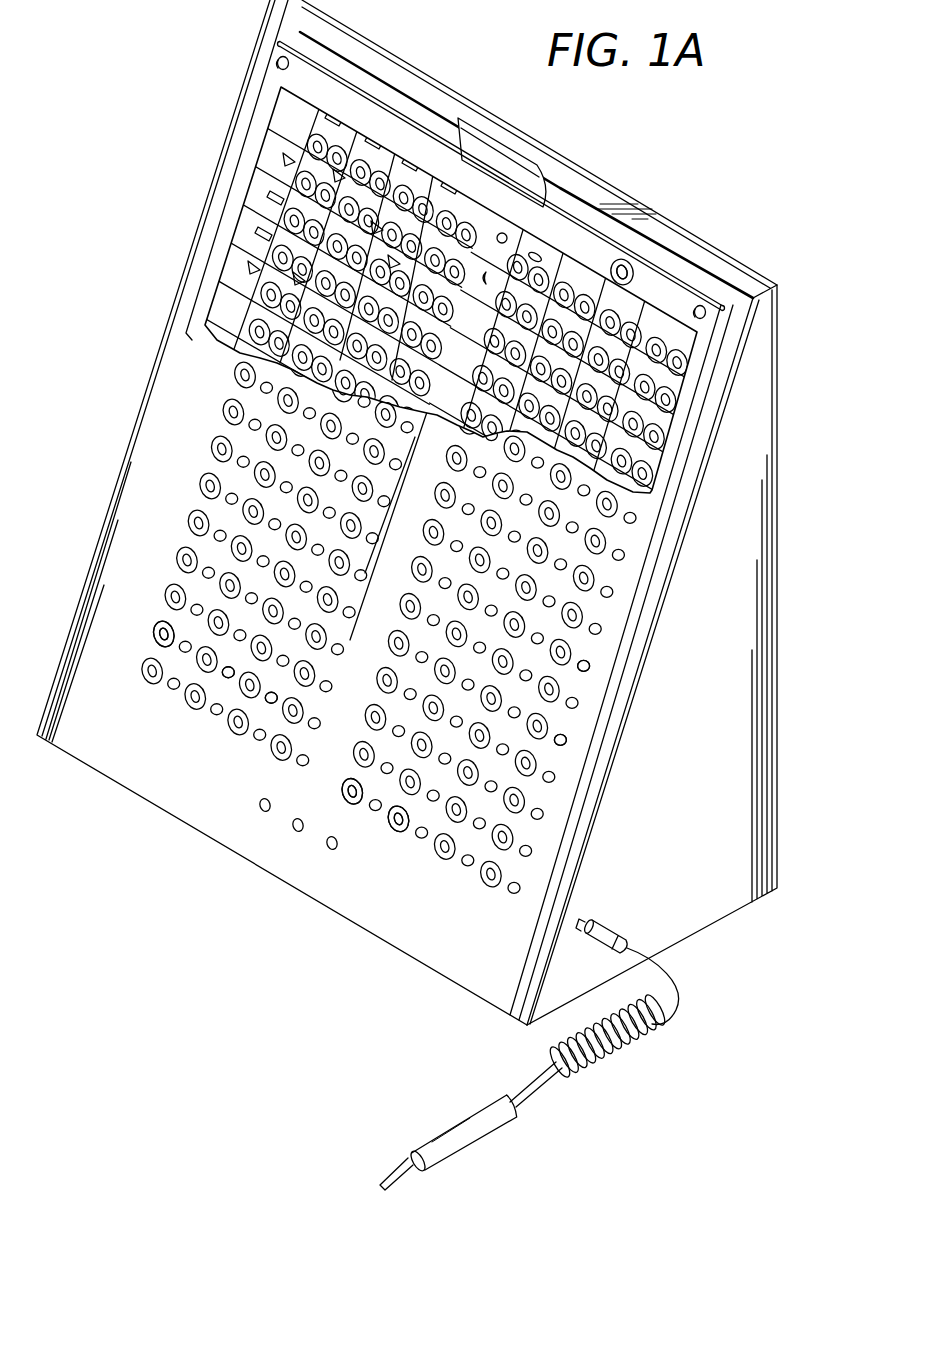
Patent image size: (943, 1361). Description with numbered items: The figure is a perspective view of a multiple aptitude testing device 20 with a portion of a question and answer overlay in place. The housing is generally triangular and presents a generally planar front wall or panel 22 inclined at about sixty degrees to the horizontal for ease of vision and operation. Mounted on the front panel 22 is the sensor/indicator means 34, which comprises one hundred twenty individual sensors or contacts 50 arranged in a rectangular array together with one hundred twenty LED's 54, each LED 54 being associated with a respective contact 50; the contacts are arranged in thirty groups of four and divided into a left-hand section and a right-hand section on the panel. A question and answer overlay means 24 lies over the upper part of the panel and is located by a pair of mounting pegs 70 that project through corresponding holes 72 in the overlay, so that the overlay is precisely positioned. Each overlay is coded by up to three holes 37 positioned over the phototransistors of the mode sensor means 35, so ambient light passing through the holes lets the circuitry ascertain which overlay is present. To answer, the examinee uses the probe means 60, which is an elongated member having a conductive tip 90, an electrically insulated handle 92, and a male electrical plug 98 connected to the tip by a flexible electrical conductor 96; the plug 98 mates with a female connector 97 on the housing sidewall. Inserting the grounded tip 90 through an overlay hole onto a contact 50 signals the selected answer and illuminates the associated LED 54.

The multiple aptitude testing device 20 is at (134, 403).
The front wall or panel 22 is at (216, 185).
The question and answer overlay means 24 is at (226, 283).
The sensor/indicator means 34 is at (298, 515).
The mode sensor means 35 is at (630, 265).
The holes 37 is at (621, 277).
The sensors or contacts 50 is at (197, 670).
The LED's 54 is at (270, 706).
The probe means 60 is at (454, 1147).
The mounting pegs 70 is at (278, 62).
The holes 72 is at (290, 60).
The conductive tip 90 is at (390, 1190).
The electrically insulated handle 92 is at (454, 1125).
The flexible electrical conductor 96 is at (590, 1052).
The female connector 97 is at (590, 920).
The male electrical plug 98 is at (618, 932).